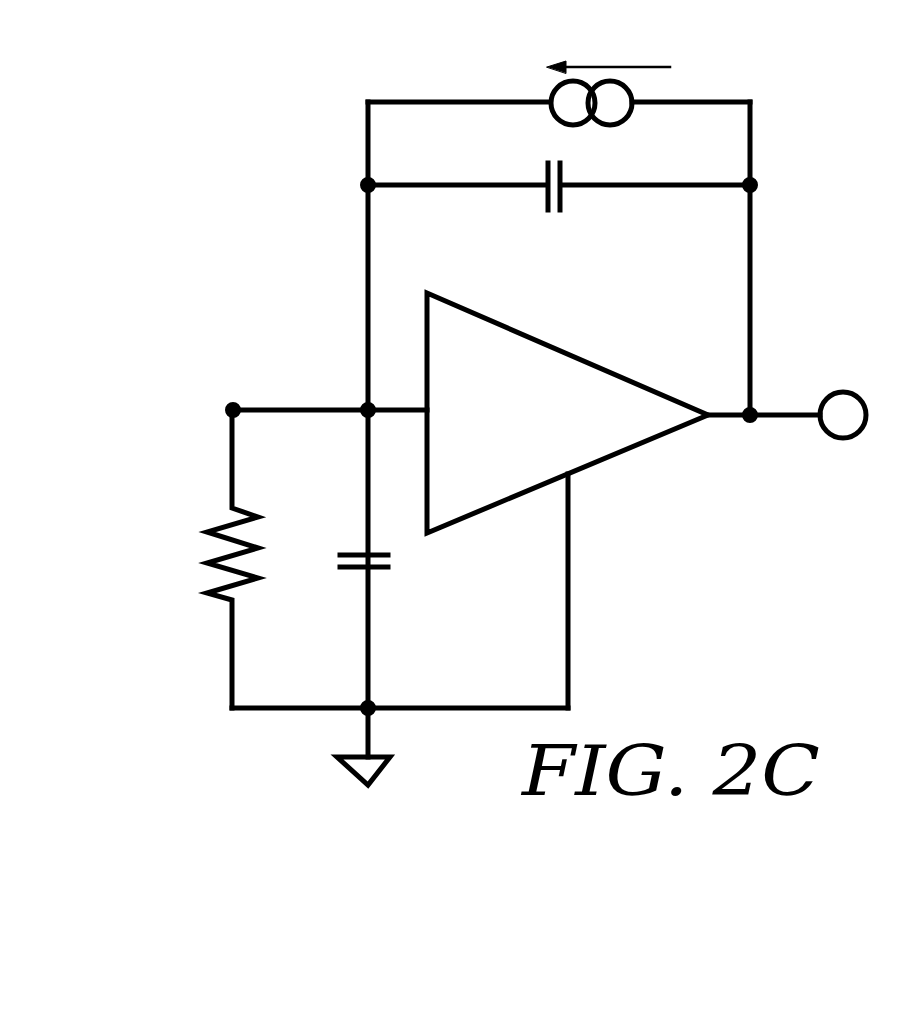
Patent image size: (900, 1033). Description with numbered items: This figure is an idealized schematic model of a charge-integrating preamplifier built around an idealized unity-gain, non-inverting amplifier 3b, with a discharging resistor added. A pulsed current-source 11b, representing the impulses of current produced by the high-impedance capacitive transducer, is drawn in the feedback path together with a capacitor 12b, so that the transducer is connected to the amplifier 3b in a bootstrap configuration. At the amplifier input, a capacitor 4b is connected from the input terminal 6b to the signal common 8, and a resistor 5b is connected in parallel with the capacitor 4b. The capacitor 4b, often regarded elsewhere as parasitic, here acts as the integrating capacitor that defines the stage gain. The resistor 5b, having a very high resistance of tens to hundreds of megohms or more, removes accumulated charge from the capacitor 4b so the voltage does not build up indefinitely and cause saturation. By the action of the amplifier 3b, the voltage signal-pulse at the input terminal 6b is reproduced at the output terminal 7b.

The pulsed current-source 11b is at (559, 99).
The capacitor 12b is at (559, 199).
The idealized unity-gain, non-inverting amplifier model 3b is at (588, 409).
The input terminal 6b is at (328, 387).
The resistor 5b is at (203, 559).
The capacitor 4b is at (387, 588).
The output terminal 7b is at (823, 387).
The signal common or ground reference 8 is at (384, 744).